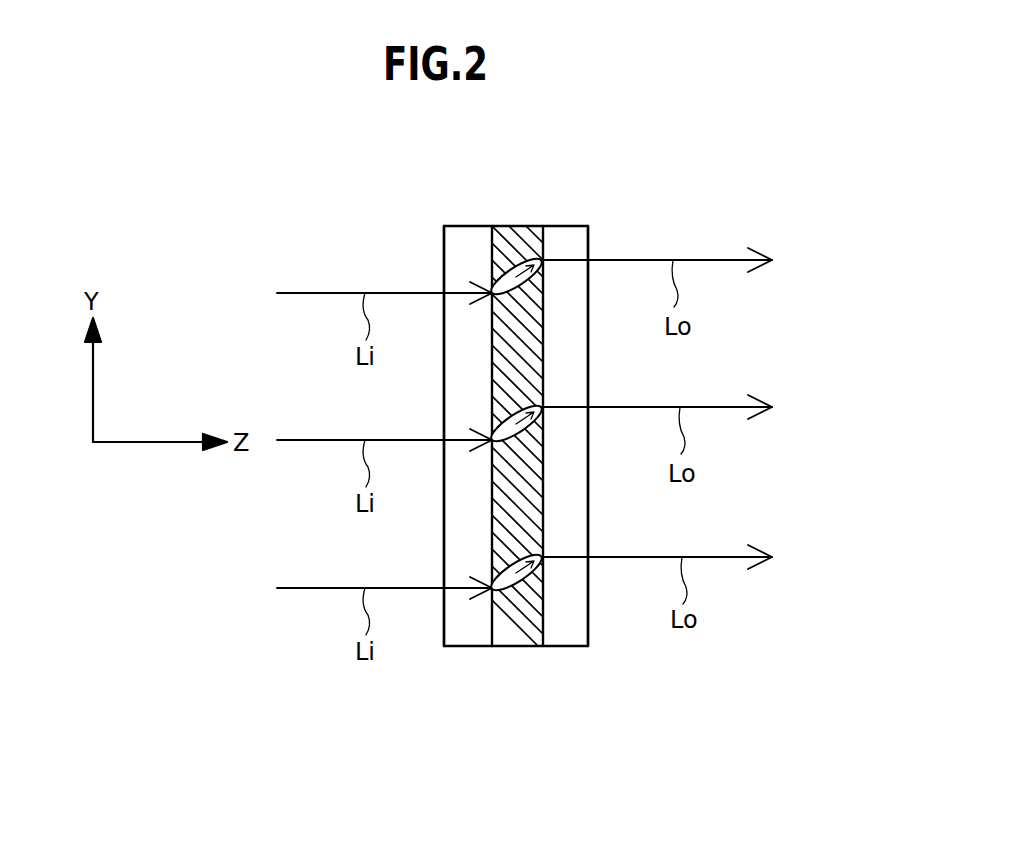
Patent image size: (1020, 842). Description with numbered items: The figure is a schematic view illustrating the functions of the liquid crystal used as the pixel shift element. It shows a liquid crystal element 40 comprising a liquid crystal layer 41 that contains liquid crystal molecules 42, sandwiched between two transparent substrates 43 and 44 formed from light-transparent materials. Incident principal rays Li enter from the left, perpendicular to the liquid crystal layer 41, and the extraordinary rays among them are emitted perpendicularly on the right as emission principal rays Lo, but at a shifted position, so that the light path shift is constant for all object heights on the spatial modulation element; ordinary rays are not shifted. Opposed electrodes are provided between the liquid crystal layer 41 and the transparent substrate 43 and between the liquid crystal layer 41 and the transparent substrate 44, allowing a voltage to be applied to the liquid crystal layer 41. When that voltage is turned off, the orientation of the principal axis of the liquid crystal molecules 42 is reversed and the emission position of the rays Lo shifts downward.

The liquid crystal element 40 is at (619, 190).
The liquid crystal layer 41 is at (518, 627).
The liquid crystal molecules 42 is at (527, 254).
The transparent substrate 43 is at (477, 637).
The transparent substrate 44 is at (563, 637).